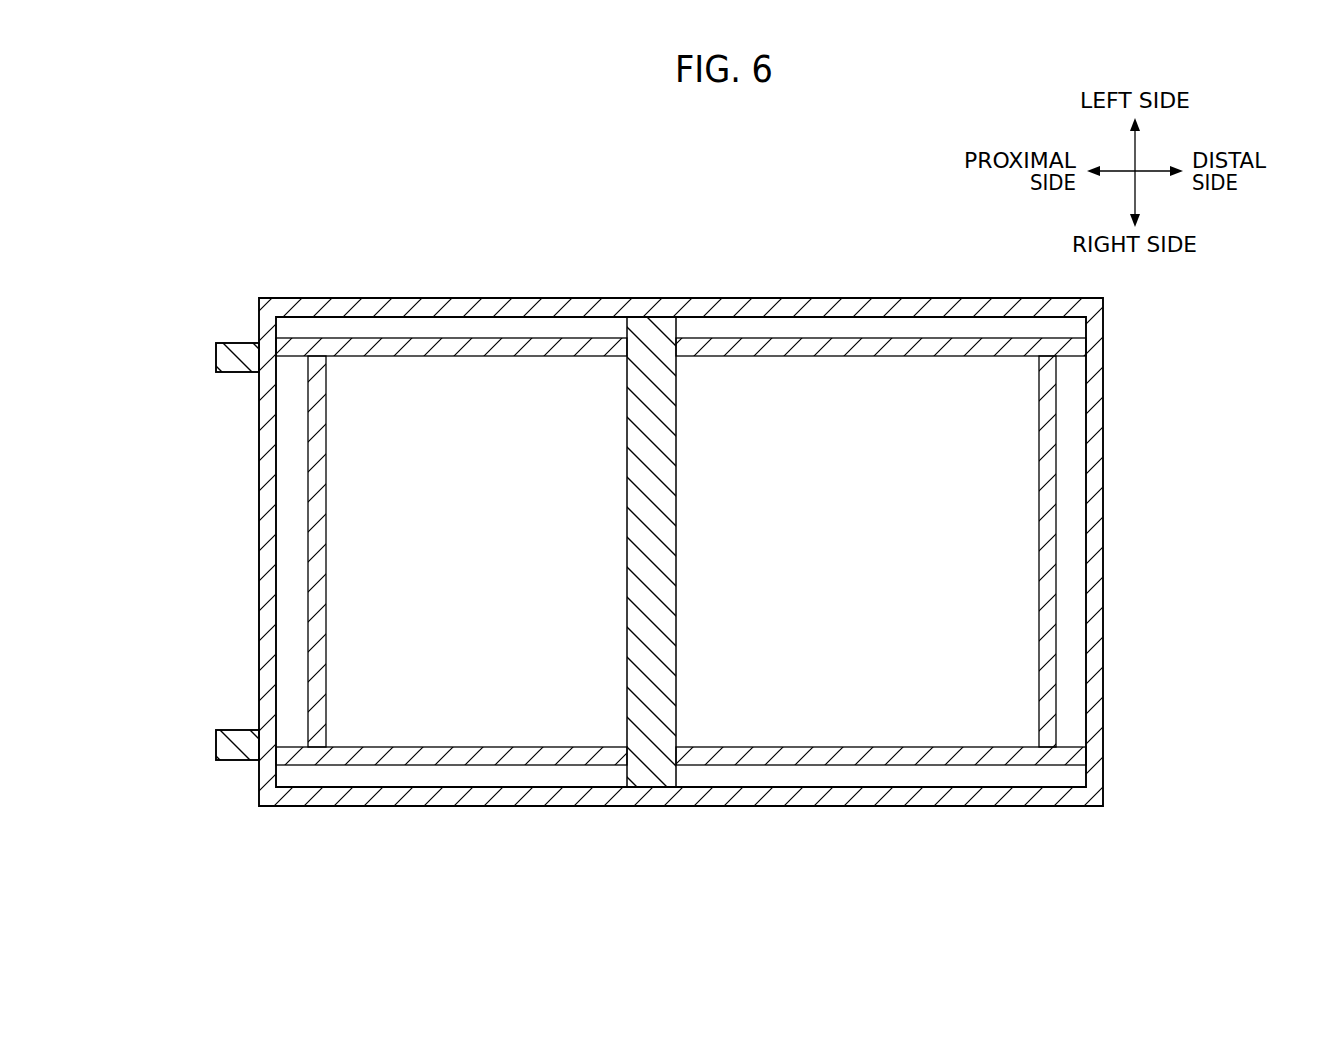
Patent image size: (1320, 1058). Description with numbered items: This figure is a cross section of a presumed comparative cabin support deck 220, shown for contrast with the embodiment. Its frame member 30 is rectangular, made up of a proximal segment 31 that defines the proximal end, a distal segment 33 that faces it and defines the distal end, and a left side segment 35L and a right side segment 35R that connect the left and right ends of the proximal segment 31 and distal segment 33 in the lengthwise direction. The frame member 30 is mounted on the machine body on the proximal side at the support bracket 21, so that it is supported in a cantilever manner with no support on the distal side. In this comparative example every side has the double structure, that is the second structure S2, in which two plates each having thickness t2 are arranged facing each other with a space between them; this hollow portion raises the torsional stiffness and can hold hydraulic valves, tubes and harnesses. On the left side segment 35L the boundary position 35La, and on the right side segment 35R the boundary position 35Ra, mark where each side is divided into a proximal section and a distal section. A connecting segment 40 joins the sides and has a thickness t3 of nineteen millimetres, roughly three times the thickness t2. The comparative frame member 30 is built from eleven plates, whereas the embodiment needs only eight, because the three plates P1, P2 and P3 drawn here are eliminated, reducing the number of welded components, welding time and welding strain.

The holder unit 220 is at (188, 278).
The frame member 30 is at (268, 298).
The proximal segment 31 is at (289, 818).
The distal segment 33 is at (1091, 818).
The left side segment 35L is at (1114, 308).
The right side segment 35R is at (1114, 799).
The boundary position 35La is at (629, 300).
The boundary position 35Ra is at (628, 808).
The support bracket 21 is at (234, 367).
The connecting segment 40 is at (663, 505).
The plate P1 is at (870, 346).
The plate P2 is at (1047, 474).
The plate P3 is at (908, 757).
The second structure S2 is at (565, 378).
The thickness t2 is at (259, 477).
The thickness t3 is at (602, 580).